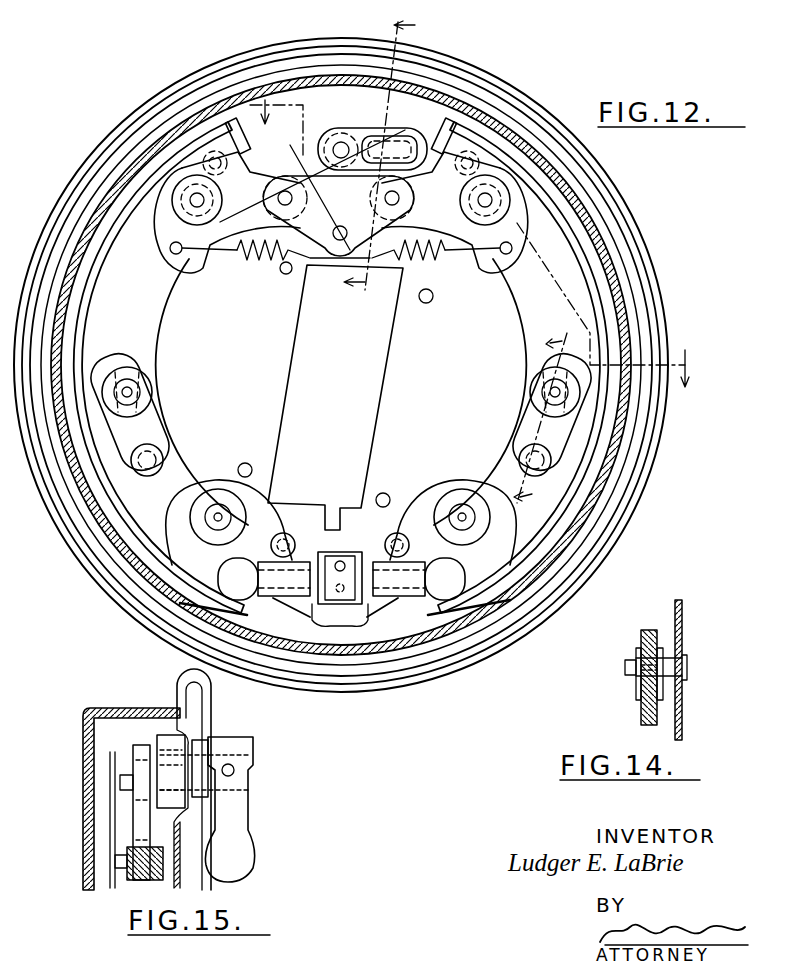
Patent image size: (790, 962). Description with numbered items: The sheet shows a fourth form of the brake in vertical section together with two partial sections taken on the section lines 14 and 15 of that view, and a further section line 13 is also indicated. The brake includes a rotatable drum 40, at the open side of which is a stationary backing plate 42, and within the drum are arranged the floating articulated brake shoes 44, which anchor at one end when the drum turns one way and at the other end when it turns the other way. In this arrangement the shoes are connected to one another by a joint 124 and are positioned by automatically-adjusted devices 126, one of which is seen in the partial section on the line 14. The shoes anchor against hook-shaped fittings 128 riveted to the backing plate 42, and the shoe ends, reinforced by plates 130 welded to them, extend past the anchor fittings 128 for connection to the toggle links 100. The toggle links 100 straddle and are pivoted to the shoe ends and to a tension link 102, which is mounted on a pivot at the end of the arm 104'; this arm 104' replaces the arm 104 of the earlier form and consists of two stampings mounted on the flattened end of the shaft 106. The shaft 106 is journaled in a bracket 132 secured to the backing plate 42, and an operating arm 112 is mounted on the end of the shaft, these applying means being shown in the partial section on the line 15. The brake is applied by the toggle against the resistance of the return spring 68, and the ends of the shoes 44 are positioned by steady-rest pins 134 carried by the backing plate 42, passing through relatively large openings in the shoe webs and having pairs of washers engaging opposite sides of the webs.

In FIG. 12, the section line 13- 13 is at (485, 243).
In FIG. 12, the section line 14— 14 is at (540, 415).
In FIG. 12, the section line 15— 15 is at (376, 153).
In FIG. 12, the rotatable drum 40 is at (598, 481).
In FIG. 15, the rotatable drum 40 is at (128, 709).
In FIG. 12, the backing plate 42 is at (50, 556).
In FIG. 14, the backing plate 42 is at (682, 634).
In FIG. 15, the backing plate 42 is at (212, 719).
In FIG. 12, the brake shoes 44 is at (152, 326).
In FIG. 14, the brake shoes 44 is at (665, 721).
In FIG. 12, the return spring 68 is at (240, 259).
In FIG. 12, the toggle links 100 is at (288, 274).
In FIG. 15, the toggle links 100 is at (150, 873).
In FIG. 12, the tension link 102 is at (420, 159).
In FIG. 15, the tension link 102 is at (150, 836).
In FIG. 12, the arm 104' is at (371, 129).
In FIG. 15, the arm 104 is at (94, 812).
In FIG. 12, the shaft 106 is at (350, 200).
In FIG. 15, the operating arm 112 is at (232, 839).
In FIG. 12, the joint 124 is at (345, 551).
In FIG. 12, the automatically-adjusted devices 126 is at (150, 426).
In FIG. 14, the automatically-adjusted devices 126 is at (645, 713).
In FIG. 12, the hook-shaped fittings 128 is at (232, 120).
In FIG. 12, the plates 130 is at (455, 263).
In FIG. 12, the bracket 132 is at (385, 118).
In FIG. 15, the bracket 132 is at (178, 774).
In FIG. 12, the steady-rest pins 134 is at (195, 204).